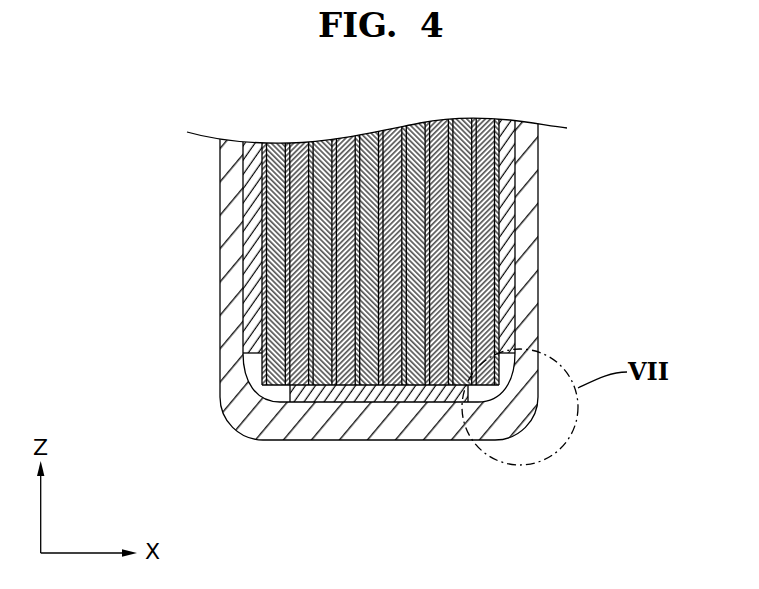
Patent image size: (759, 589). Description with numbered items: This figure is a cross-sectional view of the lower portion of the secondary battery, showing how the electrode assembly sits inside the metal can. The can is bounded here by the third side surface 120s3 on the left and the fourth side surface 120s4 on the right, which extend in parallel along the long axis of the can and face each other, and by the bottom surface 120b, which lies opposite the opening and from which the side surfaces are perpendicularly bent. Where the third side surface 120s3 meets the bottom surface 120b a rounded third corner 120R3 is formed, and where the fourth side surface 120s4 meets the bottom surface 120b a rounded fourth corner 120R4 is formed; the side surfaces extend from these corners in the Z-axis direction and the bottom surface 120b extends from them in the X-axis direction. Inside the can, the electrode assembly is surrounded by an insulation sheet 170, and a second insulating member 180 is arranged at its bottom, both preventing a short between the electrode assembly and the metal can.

The third side surface 120s3 is at (230, 180).
The fourth side surface 120s4 is at (533, 178).
The bottom surface 120b is at (438, 418).
The third corner 120R3 is at (232, 428).
The fourth corner 120R4 is at (525, 427).
The insulation sheet 170 is at (252, 240).
The second insulating member 180 is at (365, 401).